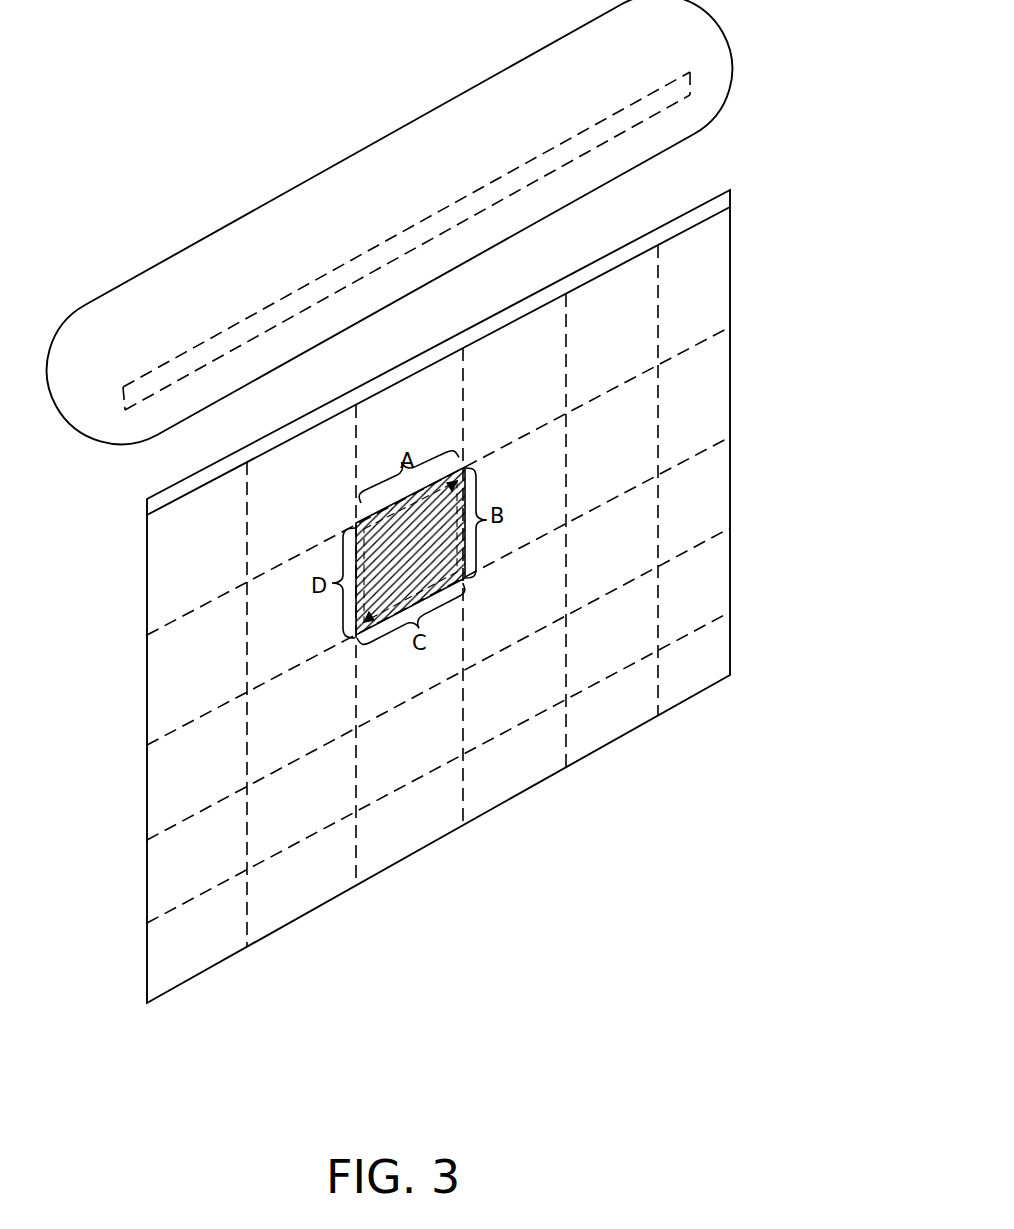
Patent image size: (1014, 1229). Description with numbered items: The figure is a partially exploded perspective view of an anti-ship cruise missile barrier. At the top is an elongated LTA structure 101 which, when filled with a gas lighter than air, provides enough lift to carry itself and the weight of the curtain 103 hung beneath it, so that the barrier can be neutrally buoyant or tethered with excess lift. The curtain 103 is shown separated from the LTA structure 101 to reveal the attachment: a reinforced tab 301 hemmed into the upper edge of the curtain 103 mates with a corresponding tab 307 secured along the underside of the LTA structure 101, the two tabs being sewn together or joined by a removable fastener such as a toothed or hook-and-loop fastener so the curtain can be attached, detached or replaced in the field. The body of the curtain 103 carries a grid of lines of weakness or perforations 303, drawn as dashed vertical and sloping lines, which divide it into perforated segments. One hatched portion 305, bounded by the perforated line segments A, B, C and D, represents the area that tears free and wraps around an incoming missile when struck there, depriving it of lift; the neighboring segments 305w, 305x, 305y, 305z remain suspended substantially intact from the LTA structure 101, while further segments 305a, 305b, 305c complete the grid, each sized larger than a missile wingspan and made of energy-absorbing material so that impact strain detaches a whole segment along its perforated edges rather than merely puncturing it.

The LTA structure 101 is at (157, 267).
The tab 307 is at (667, 108).
The curtain 103 is at (745, 479).
The reinforced tab 301 is at (730, 207).
The lines of weakness or perforations 303 is at (566, 327).
The portion of the curtain 305 is at (358, 527).
The adjacent segment 305x is at (435, 426).
The adjacent segment 305y is at (553, 484).
The adjacent segment 305w is at (323, 634).
The adjacent segment 305z is at (425, 684).
The perforated segment 305a is at (543, 609).
The perforated segment 305b is at (638, 649).
The perforated segment 305c is at (720, 677).